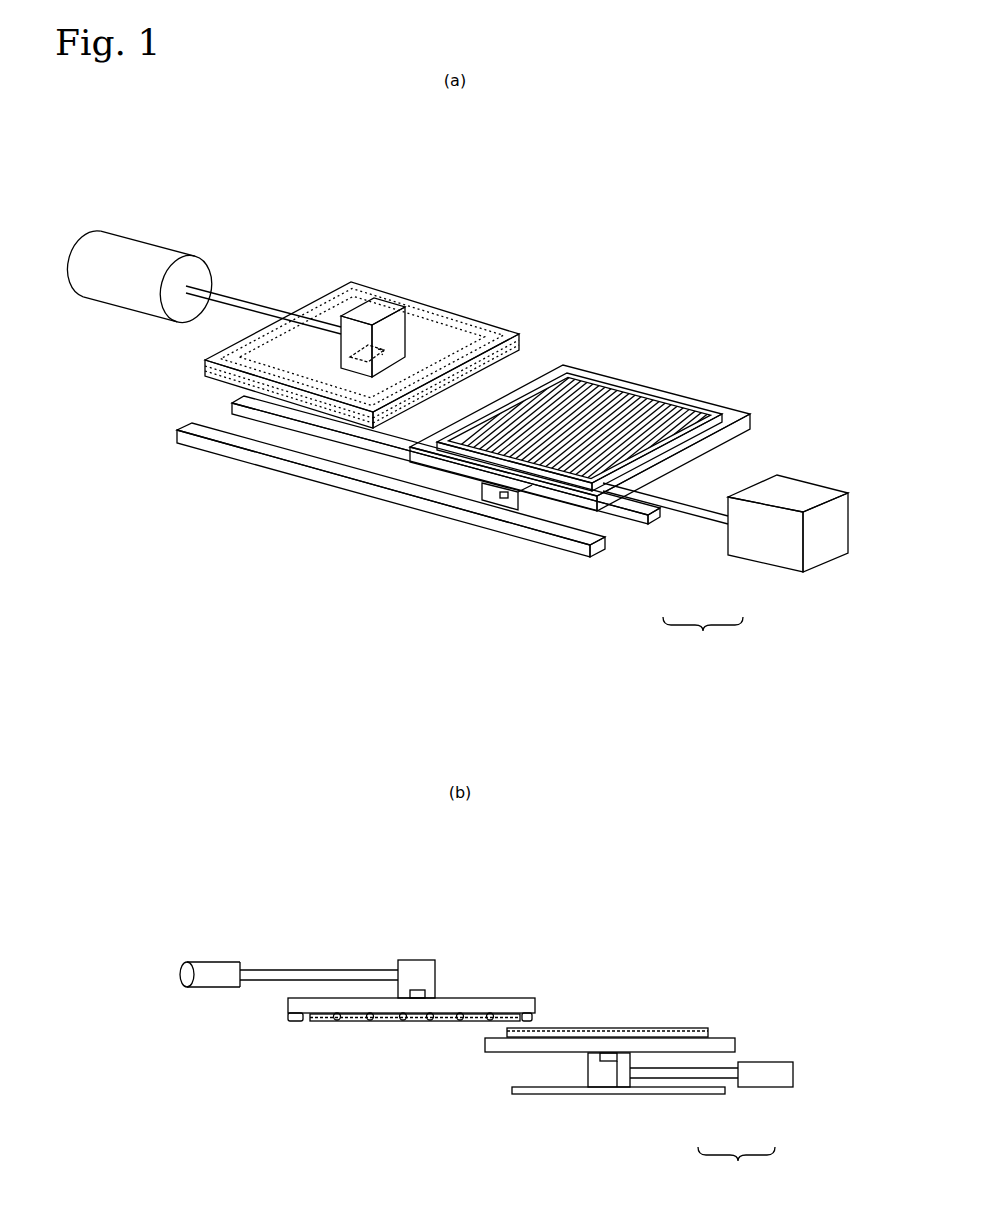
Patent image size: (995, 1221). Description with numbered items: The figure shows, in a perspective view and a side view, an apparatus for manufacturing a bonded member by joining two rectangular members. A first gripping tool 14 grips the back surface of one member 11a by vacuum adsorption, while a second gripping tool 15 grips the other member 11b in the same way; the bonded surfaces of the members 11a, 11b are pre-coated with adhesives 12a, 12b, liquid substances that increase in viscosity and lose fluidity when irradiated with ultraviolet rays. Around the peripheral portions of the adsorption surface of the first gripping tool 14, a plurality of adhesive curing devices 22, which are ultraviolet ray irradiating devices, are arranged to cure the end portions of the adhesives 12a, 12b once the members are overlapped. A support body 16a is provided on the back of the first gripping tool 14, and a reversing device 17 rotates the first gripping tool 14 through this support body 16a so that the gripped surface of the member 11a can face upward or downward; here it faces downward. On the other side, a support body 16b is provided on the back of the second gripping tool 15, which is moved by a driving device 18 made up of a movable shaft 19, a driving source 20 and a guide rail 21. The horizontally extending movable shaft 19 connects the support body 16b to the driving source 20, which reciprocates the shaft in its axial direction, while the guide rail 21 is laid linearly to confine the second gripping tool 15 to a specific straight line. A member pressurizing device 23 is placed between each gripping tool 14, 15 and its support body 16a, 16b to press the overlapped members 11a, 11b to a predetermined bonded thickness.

The member 11a is at (247, 363).
The member 11b is at (585, 483).
The adhesive 12a is at (235, 397).
The adhesive 12b is at (625, 387).
The first gripping tool 14 is at (478, 323).
The second gripping tool 15 is at (725, 407).
The support body 16a is at (367, 317).
The support body 16b is at (503, 503).
The reversing device 17 is at (134, 240).
The driving device 18 is at (719, 902).
The movable shaft 19 is at (697, 518).
The driving source 20 is at (752, 562).
The guide rail 21 is at (632, 536).
The adhesive curing device 22 is at (252, 345).
The member pressurizing device 23 is at (355, 347).